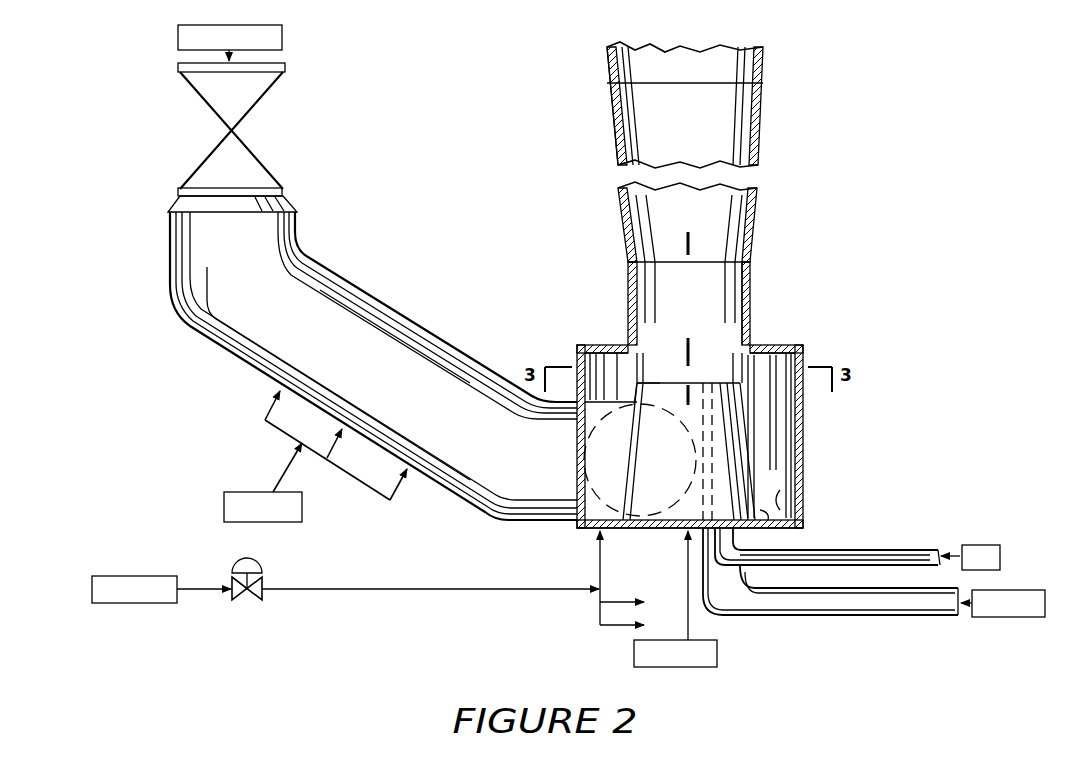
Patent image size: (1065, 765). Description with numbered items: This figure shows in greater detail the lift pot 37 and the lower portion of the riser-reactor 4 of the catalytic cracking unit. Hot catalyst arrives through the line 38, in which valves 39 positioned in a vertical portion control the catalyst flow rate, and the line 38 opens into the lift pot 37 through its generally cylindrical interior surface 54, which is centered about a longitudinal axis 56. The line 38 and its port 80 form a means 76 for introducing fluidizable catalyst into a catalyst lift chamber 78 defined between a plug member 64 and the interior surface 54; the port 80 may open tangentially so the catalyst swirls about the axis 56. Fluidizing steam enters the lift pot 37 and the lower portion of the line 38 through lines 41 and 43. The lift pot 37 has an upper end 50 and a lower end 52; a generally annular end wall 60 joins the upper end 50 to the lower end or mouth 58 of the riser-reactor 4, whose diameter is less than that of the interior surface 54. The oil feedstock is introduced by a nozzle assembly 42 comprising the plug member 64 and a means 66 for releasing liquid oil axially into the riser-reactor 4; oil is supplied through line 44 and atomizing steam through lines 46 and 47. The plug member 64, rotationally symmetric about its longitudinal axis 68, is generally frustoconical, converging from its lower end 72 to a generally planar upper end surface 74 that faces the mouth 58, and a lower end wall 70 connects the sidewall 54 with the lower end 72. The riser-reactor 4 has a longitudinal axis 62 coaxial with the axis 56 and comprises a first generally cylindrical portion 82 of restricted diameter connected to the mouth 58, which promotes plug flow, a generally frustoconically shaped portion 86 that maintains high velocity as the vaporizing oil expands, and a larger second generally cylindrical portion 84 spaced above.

The riser-reactor 4 is at (765, 68).
The lift pot 37 is at (803, 455).
The line 38 is at (413, 318).
The valve 39 is at (198, 167).
The line 41 is at (395, 587).
The nozzle assembly 42 is at (748, 392).
The line 43 is at (276, 473).
The line 44 is at (882, 548).
The line 46 is at (868, 616).
The line 47 is at (686, 566).
The upper end 50 is at (805, 345).
The lower end 52 is at (803, 527).
The interior surface 54 is at (795, 452).
The longitudinal axis 56 is at (686, 344).
The lower end 58 is at (748, 335).
The end wall 60 is at (778, 345).
The longitudinal axis 62 is at (690, 243).
The plug member 64 is at (635, 387).
The means for releasing a liquid oil feedstock 66 is at (719, 366).
The longitudinal axis 68 is at (686, 397).
The lower end wall 70 is at (780, 491).
The lower end 72 is at (768, 508).
The upper end surface 74 is at (650, 381).
The means for introducing a fluidizable catalyst 76 is at (512, 354).
The catalyst lift chamber 78 is at (785, 424).
The port 80 is at (590, 469).
The first generally cylindrical portion 82 is at (628, 296).
The second generally cylindrical portion 84 is at (607, 72).
The generally frustoconically shaped portion 86 is at (620, 193).